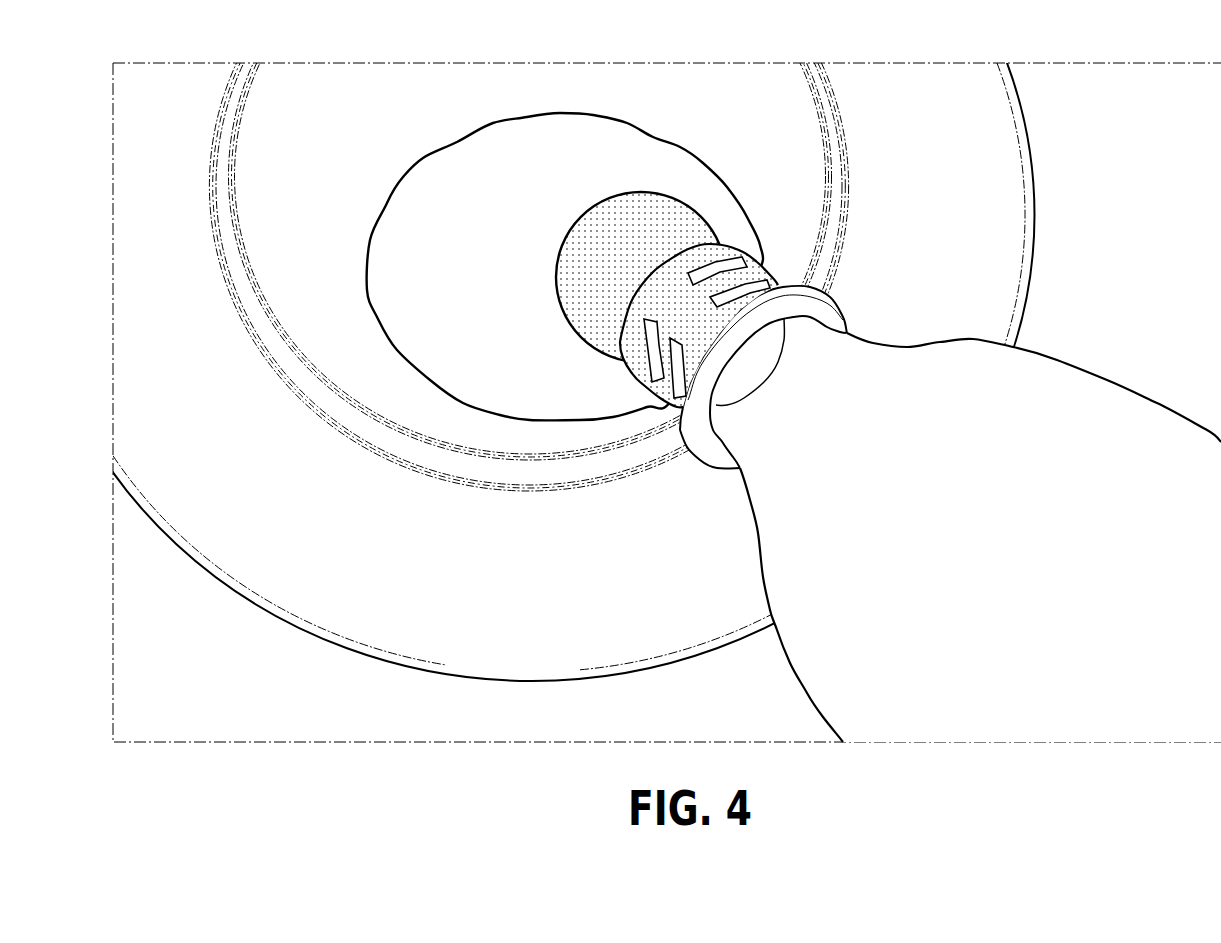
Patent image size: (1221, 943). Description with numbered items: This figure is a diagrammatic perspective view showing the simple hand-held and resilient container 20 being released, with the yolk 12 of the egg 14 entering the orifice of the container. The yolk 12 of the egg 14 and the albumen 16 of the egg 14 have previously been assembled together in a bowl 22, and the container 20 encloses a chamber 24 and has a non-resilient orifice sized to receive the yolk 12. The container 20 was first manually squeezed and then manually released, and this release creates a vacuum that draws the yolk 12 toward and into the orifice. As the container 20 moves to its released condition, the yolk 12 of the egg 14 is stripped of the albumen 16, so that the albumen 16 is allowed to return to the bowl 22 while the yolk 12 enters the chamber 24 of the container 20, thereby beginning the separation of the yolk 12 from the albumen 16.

The yolk 12 is at (608, 197).
The egg 14 is at (677, 147).
The albumen 16 is at (618, 122).
The simple hand-held and resilient container 20 is at (918, 338).
The bowl 22 is at (338, 616).
The chamber 24 is at (785, 356).